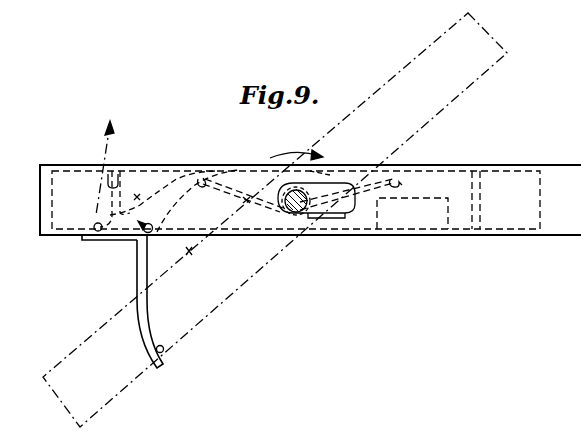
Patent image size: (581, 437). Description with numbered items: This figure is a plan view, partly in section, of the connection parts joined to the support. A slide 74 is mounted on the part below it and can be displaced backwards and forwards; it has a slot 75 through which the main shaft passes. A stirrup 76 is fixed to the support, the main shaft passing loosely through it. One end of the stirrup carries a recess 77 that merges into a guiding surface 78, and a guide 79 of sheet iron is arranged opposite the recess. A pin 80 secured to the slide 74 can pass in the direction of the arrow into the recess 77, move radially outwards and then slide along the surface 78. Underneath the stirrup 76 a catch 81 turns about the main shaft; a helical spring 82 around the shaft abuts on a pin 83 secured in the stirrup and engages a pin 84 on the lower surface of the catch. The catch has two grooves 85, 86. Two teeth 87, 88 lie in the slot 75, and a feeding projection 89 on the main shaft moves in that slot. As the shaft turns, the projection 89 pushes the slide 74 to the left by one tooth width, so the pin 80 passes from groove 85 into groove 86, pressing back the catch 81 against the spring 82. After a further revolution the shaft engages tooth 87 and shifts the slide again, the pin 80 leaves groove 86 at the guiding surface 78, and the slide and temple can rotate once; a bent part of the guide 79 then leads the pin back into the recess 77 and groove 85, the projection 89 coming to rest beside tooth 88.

The slide 74 is at (510, 52).
The slot 75 is at (328, 188).
The stirrup 76 is at (478, 211).
The recess 77 is at (141, 198).
The guiding surface 78 is at (111, 176).
The guide 79 is at (142, 326).
The pin 80 is at (151, 233).
The catch 81 is at (154, 181).
The helical spring 82 is at (247, 199).
The pin 83 is at (400, 178).
The pin 84 is at (202, 188).
The groove 85 is at (190, 253).
The groove 86 is at (125, 240).
The tooth 87 is at (304, 214).
The tooth 88 is at (294, 214).
The feeding projection 89 is at (344, 215).